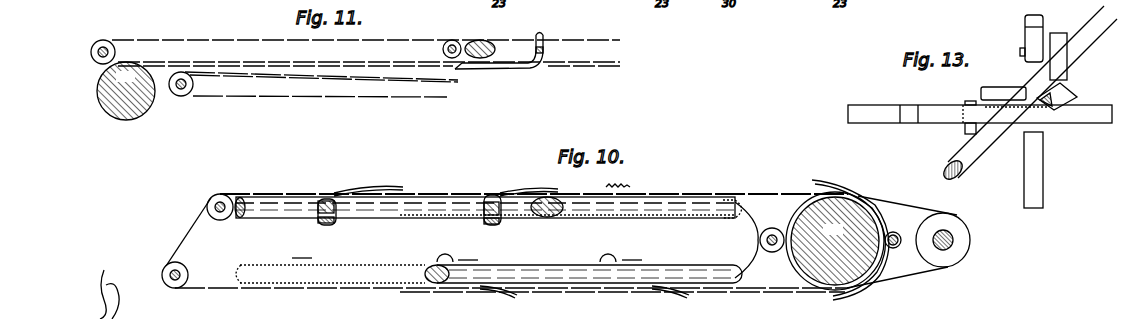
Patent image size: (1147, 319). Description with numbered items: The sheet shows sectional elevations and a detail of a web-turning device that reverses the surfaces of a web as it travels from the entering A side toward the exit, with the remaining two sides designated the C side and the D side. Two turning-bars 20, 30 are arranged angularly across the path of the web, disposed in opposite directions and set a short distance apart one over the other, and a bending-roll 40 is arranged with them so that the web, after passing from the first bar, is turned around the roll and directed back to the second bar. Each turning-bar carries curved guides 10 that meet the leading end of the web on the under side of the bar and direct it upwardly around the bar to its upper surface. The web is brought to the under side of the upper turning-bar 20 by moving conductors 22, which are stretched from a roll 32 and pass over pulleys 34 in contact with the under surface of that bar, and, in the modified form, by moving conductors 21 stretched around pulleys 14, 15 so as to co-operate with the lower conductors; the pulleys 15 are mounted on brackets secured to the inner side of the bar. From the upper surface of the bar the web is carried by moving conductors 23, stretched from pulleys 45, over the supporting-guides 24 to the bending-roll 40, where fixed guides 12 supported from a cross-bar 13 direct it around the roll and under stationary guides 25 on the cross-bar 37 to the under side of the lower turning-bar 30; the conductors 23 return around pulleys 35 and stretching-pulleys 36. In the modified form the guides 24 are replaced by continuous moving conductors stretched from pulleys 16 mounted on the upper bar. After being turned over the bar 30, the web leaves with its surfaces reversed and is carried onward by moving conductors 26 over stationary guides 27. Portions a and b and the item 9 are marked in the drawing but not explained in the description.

In FIG. 11, the flange strip 9 is at (484, 64).
In FIG. 13, the flange strip 9 is at (1024, 67).
In FIG. 10, the flange strip 9 is at (373, 190).
In FIG. 11, the curved guides 10 is at (546, 40).
In FIG. 13, the curved guides 10 is at (1067, 78).
In FIG. 10, the curved guides 10 is at (327, 197).
In FIG. 10, the fixed guides 12 is at (850, 193).
In FIG. 10, the cross-bar 13 is at (898, 234).
In FIG. 11, the pulleys 14 is at (92, 49).
In FIG. 11, the pulleys 15 is at (452, 40).
In FIG. 13, the pulleys 15 is at (962, 110).
In FIG. 13, the pulleys 16 is at (1028, 47).
In FIG. 11, the upper turning-bar 20 is at (490, 49).
In FIG. 13, the upper turning-bar 20 is at (1026, 89).
In FIG. 10, the upper turning-bar 20 is at (245, 219).
In FIG. 11, the moving conductors 21 is at (268, 60).
In FIG. 13, the moving conductors 21 is at (930, 110).
In FIG. 10, the moving conductors 21 is at (312, 213).
In FIG. 11, the moving conductors 22 is at (372, 63).
In FIG. 13, the moving conductors 22 is at (980, 114).
In FIG. 10, the moving conductors 22 is at (317, 222).
In FIG. 11, the moving conductors 23 is at (366, 53).
In FIG. 13, the moving conductors 23 is at (1043, 172).
In FIG. 10, the moving conductors 23 is at (192, 230).
In FIG. 13, the supporting-guides 24 is at (1043, 18).
In FIG. 10, the supporting-guides 24 is at (773, 199).
In FIG. 10, the stationary guides 25 is at (758, 284).
In FIG. 11, the moving conductors 26 is at (320, 97).
In FIG. 10, the moving conductors 26 is at (474, 262).
In FIG. 10, the stationary guides 27 is at (569, 273).
In FIG. 10, the turning-bar 30 is at (518, 272).
In FIG. 11, the roll 32 is at (126, 91).
In FIG. 11, the pulleys 34 is at (193, 86).
In FIG. 10, the pulleys 35 is at (943, 240).
In FIG. 10, the stretching-pulleys 36 is at (163, 274).
In FIG. 10, the cross-bar 37 is at (760, 241).
In FIG. 10, the bending-roll 40 is at (835, 241).
In FIG. 10, the pulleys 45 is at (214, 196).
In FIG. 11, the A side A is at (108, 66).
In FIG. 10, the C side C is at (135, 224).
In FIG. 10, the D side D is at (996, 242).
In FIG. 10, the portion a is at (787, 190).
In FIG. 10, the portion b is at (786, 205).